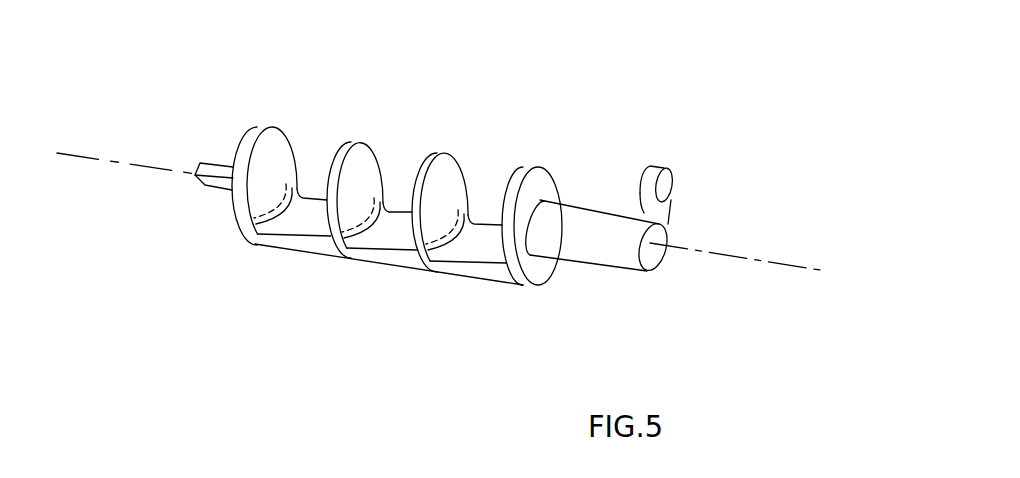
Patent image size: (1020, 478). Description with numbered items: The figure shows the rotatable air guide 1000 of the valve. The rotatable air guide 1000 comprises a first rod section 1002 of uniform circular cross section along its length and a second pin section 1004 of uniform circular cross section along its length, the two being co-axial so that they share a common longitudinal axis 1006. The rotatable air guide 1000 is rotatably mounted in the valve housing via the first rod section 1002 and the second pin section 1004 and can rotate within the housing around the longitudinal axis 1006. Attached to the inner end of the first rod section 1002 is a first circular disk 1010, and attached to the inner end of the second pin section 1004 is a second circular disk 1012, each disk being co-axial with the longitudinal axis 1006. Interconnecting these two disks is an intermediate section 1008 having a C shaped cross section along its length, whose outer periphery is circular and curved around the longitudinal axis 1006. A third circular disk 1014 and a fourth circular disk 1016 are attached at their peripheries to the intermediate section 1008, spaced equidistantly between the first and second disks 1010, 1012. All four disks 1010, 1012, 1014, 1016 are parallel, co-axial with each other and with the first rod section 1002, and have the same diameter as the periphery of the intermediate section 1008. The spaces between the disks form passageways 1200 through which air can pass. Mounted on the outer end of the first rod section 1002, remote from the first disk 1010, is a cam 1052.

The rotatable air guide 1000 is at (280, 359).
The first rod section 1002 is at (577, 260).
The second pin section 1004 is at (212, 165).
The longitudinal axis 1006 is at (75, 162).
The intermediate section 1008 is at (400, 257).
The first circular disk 1010 is at (521, 178).
The second circular disk 1012 is at (281, 146).
The third circular disk 1014 is at (452, 170).
The fourth circular disk 1016 is at (360, 172).
The cam 1052 is at (668, 197).
The passageways 1200 is at (300, 228).